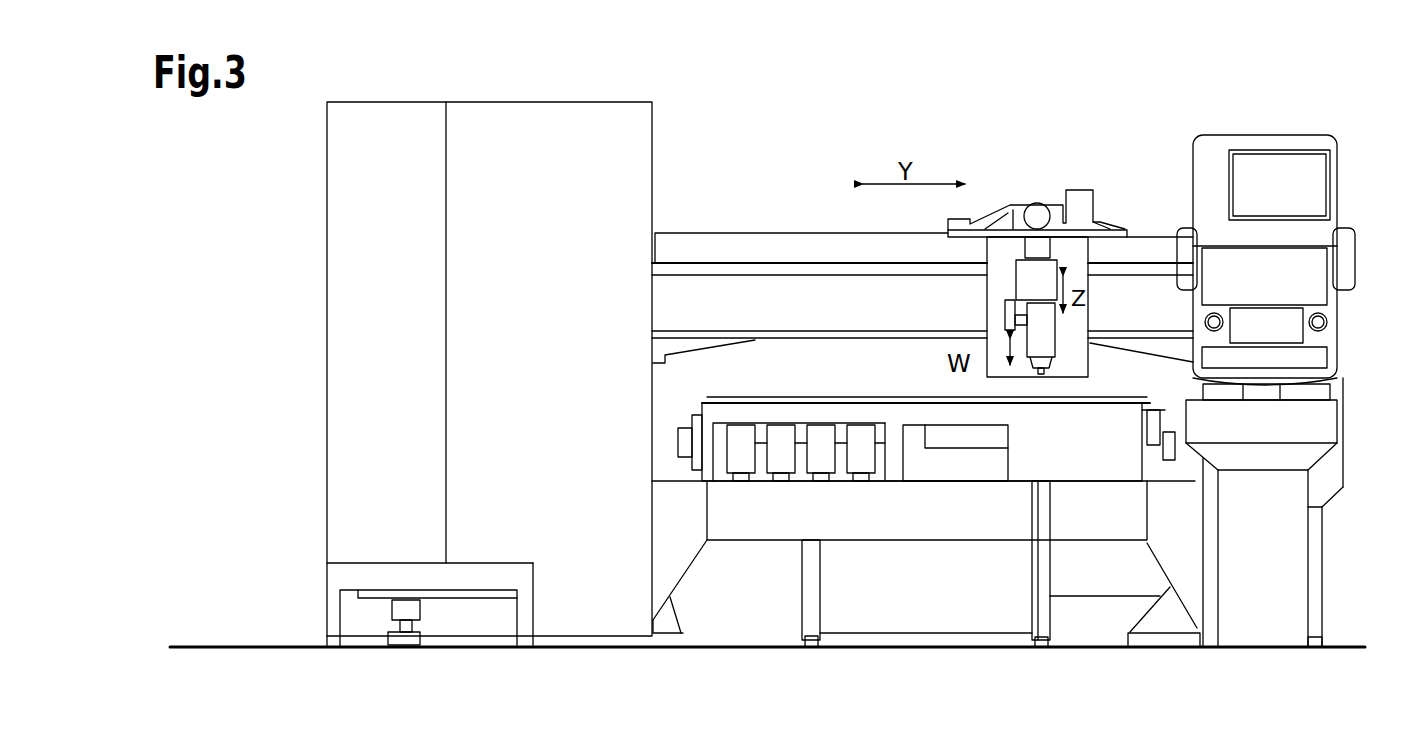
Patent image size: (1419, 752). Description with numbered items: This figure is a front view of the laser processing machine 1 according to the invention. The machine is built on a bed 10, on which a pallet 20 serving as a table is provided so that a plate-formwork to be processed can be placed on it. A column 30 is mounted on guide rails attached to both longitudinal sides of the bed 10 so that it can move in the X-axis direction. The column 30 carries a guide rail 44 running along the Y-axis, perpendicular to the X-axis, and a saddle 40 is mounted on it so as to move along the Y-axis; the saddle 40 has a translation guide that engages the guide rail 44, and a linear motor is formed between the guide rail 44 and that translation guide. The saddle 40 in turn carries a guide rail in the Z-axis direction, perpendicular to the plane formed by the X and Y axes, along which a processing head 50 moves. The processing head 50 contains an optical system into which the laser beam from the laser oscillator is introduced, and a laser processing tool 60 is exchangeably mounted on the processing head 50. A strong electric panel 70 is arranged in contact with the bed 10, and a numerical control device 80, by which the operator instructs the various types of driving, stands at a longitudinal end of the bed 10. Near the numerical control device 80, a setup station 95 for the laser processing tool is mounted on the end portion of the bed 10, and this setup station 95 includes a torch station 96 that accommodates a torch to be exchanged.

The laser processing machine 1 is at (993, 133).
The bed 10 is at (1316, 570).
The pallet 20 is at (1148, 440).
The column 30 is at (826, 257).
The saddle 40 is at (1020, 207).
The guide rail 44 is at (730, 275).
The processing head 50 is at (1040, 283).
The laser processing tool 60 is at (1040, 337).
The strong electric panel 70 is at (489, 374).
The numerical control device 80 is at (1323, 230).
The setup station 95 is at (1070, 468).
The torch station 96 is at (767, 515).